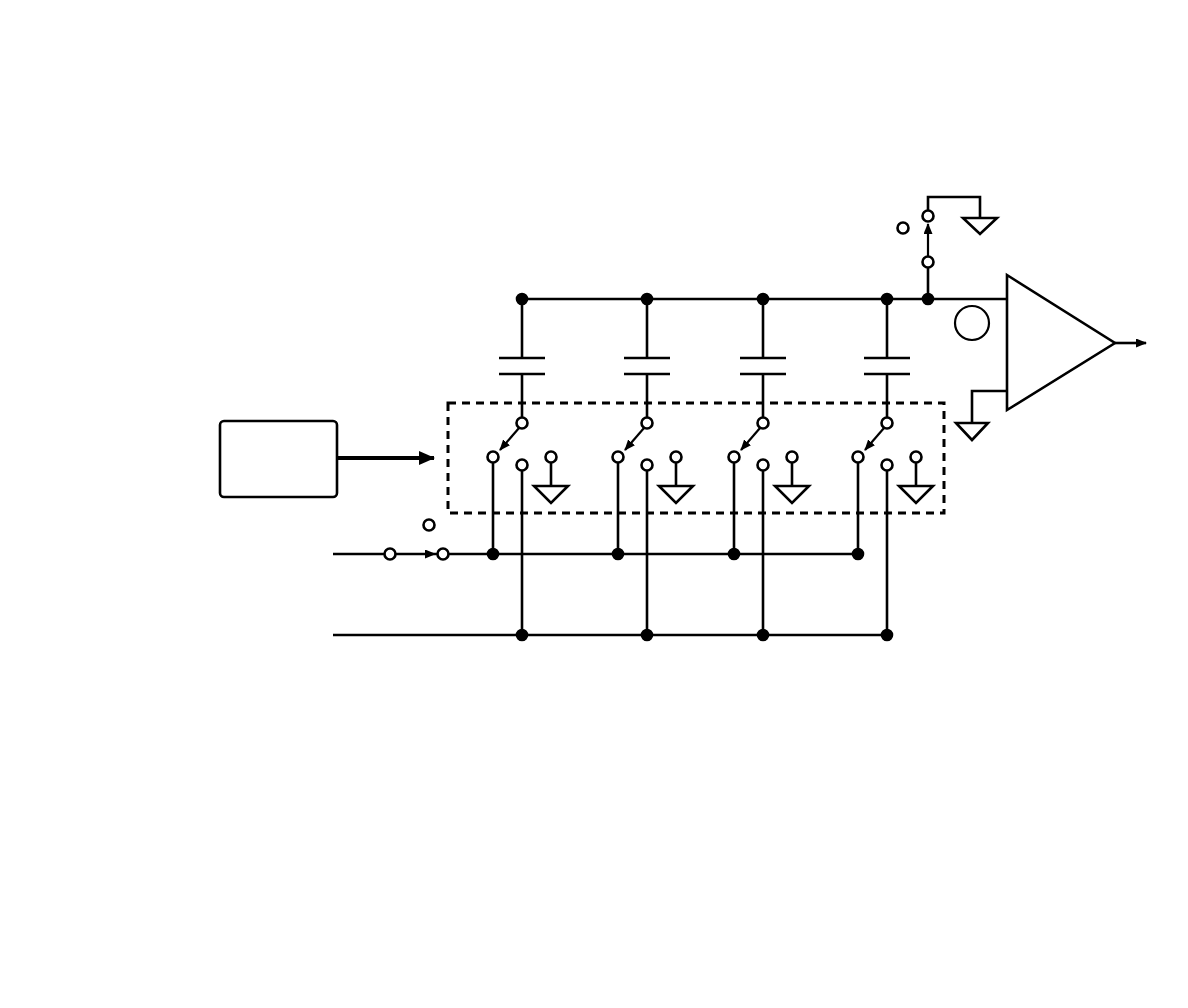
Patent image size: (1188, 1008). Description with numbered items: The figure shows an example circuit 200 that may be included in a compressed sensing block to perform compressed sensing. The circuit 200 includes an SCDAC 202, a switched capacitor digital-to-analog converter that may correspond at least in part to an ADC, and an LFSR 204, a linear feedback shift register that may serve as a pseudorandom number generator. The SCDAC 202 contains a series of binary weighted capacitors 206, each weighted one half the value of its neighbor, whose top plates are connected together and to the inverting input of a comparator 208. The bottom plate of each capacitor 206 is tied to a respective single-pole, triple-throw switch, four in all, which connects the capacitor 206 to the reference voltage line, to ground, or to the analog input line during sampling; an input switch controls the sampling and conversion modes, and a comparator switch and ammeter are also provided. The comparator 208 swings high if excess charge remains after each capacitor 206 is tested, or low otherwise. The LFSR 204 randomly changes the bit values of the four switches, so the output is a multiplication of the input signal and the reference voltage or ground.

The circuit 200 is at (86, 79).
The switched capacitor digital-to-analog converter (SCDAC) 202 is at (1086, 226).
The linear feedback shift register (LFSR) 204 is at (262, 480).
The binary weighted capacitors 206 is at (500, 343).
The comparator 208 is at (1081, 290).